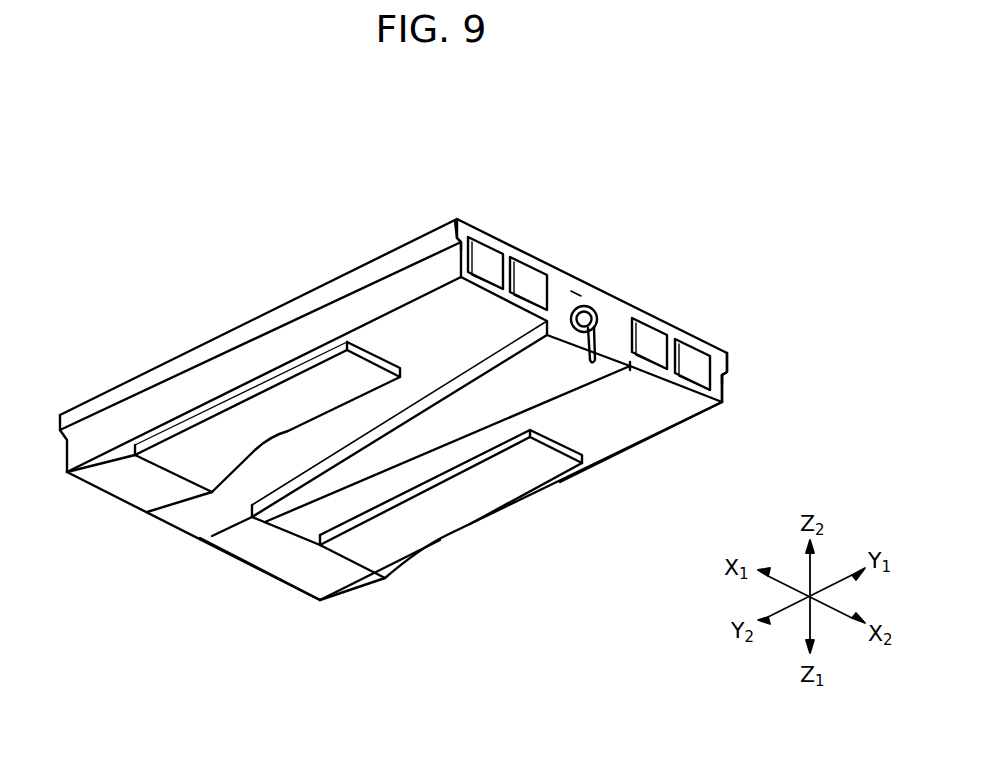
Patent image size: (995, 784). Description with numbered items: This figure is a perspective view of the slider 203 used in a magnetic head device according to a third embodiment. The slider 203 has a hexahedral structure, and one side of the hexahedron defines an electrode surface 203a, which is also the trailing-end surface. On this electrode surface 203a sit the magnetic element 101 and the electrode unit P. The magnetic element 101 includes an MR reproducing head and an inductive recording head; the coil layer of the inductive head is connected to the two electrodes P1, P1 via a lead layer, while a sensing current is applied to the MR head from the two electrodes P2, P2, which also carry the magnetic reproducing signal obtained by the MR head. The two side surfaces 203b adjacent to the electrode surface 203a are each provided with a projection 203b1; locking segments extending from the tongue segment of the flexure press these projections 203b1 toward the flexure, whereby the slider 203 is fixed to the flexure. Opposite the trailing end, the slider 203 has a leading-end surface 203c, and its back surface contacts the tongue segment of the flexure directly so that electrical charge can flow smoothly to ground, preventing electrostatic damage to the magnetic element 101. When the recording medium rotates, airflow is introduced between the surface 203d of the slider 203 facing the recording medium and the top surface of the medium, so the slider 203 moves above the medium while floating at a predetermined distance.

The slider 203 is at (455, 365).
The electrode surface 203a is at (565, 288).
The side surface 203b is at (333, 315).
The projection 203b1 is at (420, 268).
The leading-end surface 203c is at (281, 582).
The surface facing the recording medium 203d is at (642, 430).
The magnetic element 101 is at (594, 288).
The electrode unit P is at (610, 243).
The electrode P1 is at (492, 255).
The electrode P2 is at (606, 246).